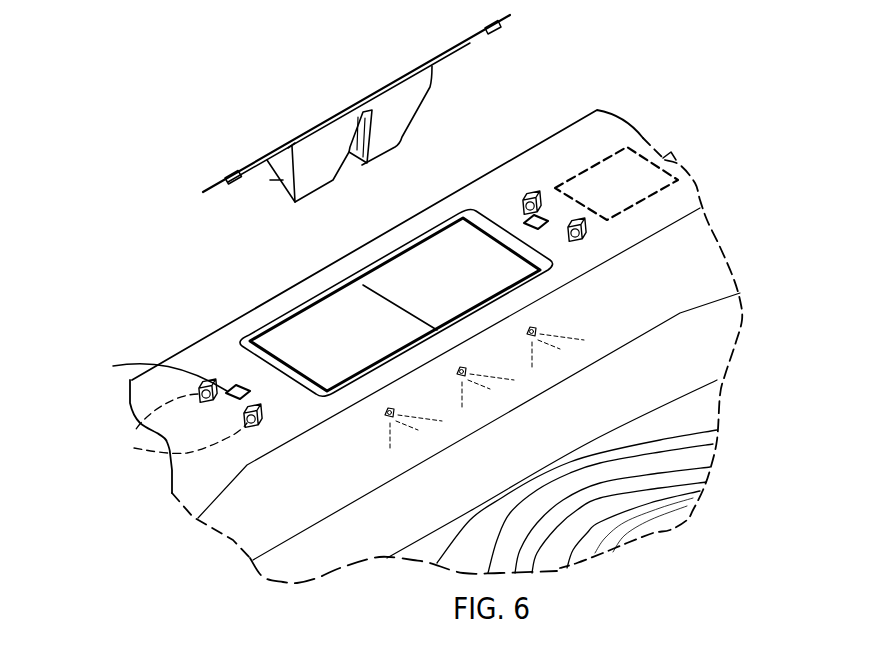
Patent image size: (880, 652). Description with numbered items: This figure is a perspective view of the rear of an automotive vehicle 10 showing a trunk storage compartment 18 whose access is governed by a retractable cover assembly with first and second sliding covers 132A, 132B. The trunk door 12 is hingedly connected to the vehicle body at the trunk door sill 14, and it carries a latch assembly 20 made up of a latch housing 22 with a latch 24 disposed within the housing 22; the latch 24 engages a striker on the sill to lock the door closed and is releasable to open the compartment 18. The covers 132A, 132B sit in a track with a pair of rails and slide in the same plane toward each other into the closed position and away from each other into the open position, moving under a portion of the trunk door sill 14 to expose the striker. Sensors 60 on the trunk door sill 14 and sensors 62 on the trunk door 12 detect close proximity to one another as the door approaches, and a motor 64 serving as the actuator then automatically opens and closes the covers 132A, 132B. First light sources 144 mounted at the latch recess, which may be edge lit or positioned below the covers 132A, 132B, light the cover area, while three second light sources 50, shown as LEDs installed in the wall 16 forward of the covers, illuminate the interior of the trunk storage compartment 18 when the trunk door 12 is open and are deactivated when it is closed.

The automotive vehicle 10 is at (123, 225).
The trunk door 12 is at (468, 42).
The trunk door sill 14 is at (528, 170).
The wall 16 is at (700, 257).
The trunk storage compartment 18 is at (687, 420).
The latch assembly 20 is at (250, 238).
The latch housing 22 is at (280, 180).
The latch 24 is at (352, 160).
The second light sources 50 is at (530, 340).
The sensors 60 is at (320, 307).
The sensors 62 is at (235, 183).
The motor 64 is at (668, 157).
The first sliding cover 132A is at (430, 262).
The second sliding cover 132B is at (288, 343).
The first light source 144 is at (535, 195).